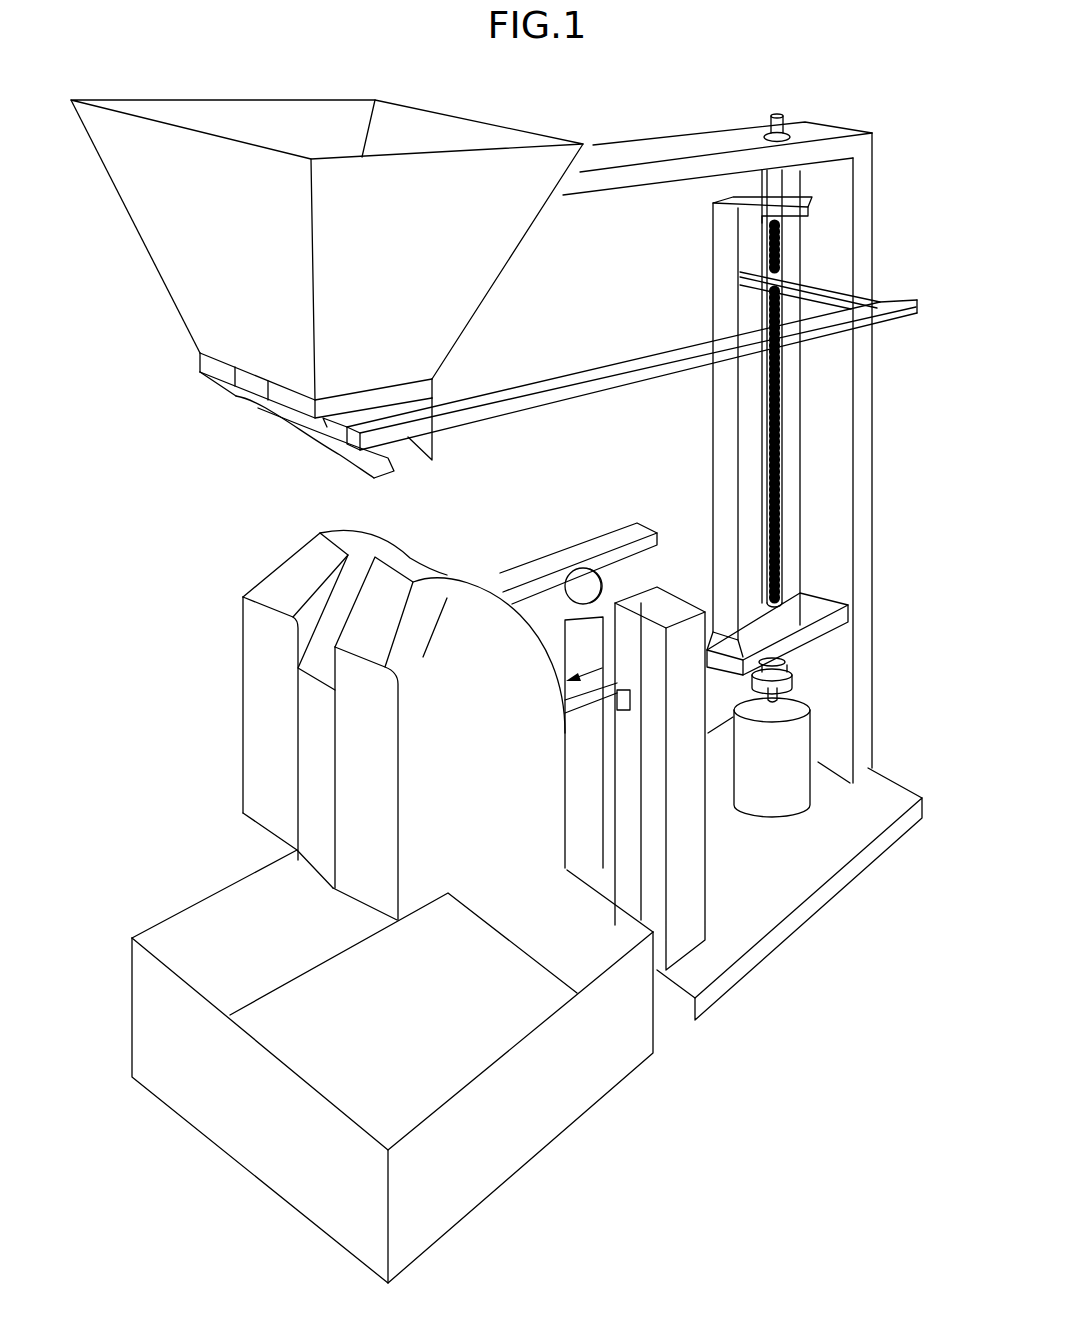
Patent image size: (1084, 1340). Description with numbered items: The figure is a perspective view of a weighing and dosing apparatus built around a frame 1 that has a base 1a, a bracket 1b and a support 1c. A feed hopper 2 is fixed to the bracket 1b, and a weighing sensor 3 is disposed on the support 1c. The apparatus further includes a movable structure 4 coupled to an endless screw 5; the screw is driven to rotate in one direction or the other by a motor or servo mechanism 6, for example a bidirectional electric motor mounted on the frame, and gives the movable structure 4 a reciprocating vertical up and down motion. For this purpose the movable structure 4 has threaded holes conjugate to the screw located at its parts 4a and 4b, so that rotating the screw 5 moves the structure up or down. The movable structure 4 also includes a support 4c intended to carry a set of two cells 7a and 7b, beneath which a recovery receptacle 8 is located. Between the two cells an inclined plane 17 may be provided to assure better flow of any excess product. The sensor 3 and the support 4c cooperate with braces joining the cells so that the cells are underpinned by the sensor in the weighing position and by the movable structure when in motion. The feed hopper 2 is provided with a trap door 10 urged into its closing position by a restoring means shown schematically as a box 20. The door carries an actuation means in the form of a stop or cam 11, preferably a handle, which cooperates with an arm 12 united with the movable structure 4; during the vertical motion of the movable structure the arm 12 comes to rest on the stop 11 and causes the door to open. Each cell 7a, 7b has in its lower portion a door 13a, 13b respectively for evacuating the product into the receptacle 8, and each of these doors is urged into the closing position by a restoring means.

The frame 1 is at (755, 607).
The base 1a is at (790, 925).
The bracket 1b is at (858, 540).
The support 1c is at (688, 940).
The feed hopper 2 is at (327, 302).
The weighing sensor 3 is at (525, 572).
The movable structure 4 is at (825, 422).
The part of movable structure with threaded hole 4a is at (780, 612).
The part of movable structure with threaded hole 4b is at (810, 208).
The support 4c is at (600, 710).
The endless screw 5 is at (775, 433).
The motor or servo mechanism 6 is at (793, 763).
The cell 7a is at (289, 709).
The cell 7b is at (333, 738).
The recovery receptacle 8 is at (255, 1145).
The trap door 10 is at (252, 407).
The stop or cam 11 is at (333, 420).
The arm 12 is at (880, 315).
The door 13a is at (257, 825).
The door 13b is at (360, 897).
The inclined plane 17 is at (330, 640).
The restoring means 20 is at (245, 402).